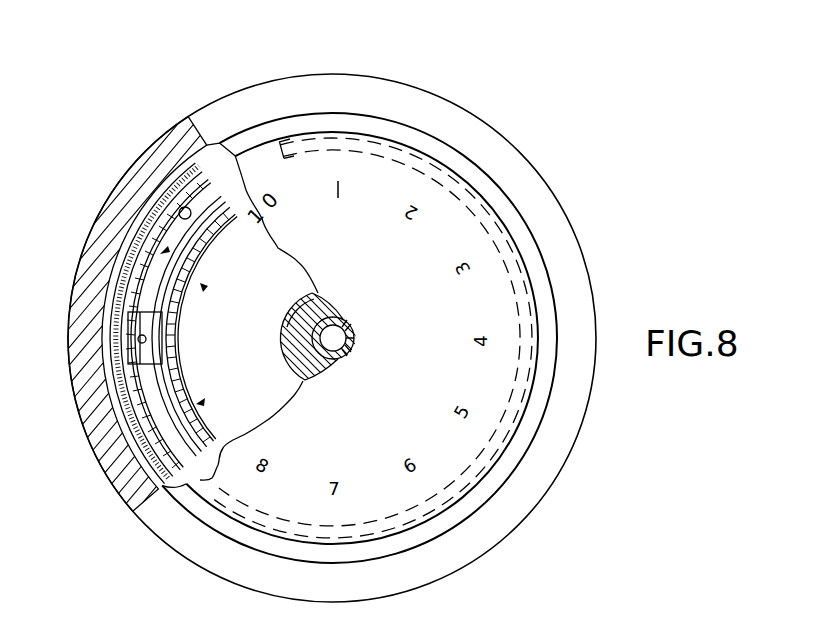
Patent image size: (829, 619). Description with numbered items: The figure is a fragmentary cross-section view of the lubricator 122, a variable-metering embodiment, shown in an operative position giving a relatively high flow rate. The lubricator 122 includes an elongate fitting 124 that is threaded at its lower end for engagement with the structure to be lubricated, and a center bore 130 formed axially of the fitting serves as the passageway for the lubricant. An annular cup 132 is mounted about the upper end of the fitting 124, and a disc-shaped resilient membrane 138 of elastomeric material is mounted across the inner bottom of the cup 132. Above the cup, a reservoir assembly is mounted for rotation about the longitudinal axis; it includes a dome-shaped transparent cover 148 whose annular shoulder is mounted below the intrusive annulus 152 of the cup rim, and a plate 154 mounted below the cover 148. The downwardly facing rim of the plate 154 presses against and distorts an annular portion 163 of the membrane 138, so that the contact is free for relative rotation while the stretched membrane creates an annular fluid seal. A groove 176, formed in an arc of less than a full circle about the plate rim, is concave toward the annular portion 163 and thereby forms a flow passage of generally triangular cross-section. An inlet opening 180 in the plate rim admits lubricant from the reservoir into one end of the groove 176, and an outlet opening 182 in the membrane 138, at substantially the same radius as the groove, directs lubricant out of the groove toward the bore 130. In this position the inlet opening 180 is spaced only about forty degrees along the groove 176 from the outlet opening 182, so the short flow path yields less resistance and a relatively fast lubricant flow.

The lubricator 122 is at (588, 130).
The elongate fitting 124 is at (305, 342).
The center bore 130 is at (335, 326).
The annular cup 132 is at (200, 403).
The disc-shaped resilient membrane 138 is at (178, 357).
The dome-shaped transparent cover 148 is at (307, 262).
The intrusive annulus 152 is at (270, 100).
The plate 154 is at (213, 185).
The annular portion of membrane 163 is at (150, 346).
The annular channel or groove 176 is at (175, 271).
The inlet opening 180 is at (217, 217).
The outlet opening 182 is at (150, 318).